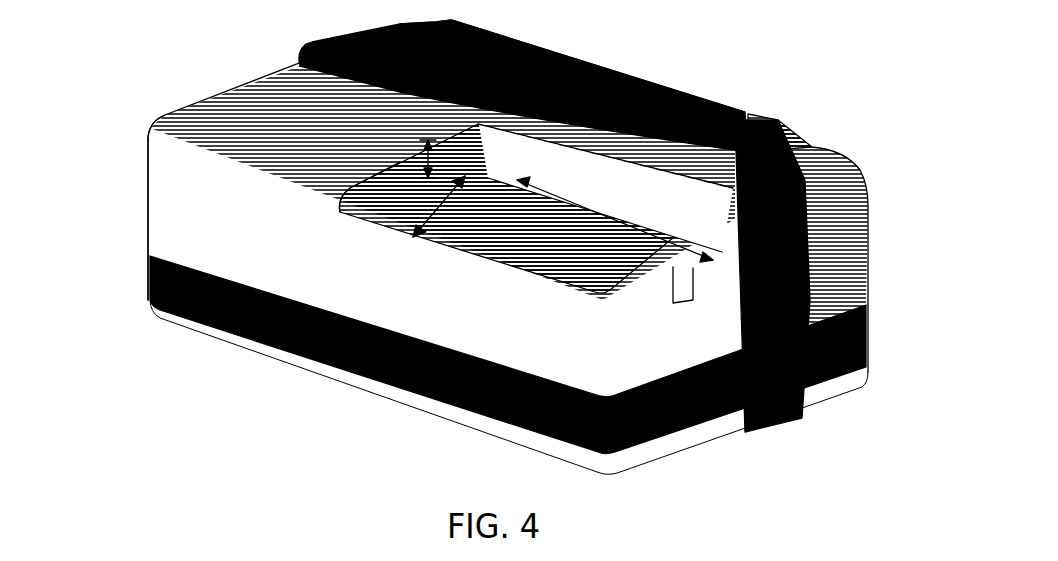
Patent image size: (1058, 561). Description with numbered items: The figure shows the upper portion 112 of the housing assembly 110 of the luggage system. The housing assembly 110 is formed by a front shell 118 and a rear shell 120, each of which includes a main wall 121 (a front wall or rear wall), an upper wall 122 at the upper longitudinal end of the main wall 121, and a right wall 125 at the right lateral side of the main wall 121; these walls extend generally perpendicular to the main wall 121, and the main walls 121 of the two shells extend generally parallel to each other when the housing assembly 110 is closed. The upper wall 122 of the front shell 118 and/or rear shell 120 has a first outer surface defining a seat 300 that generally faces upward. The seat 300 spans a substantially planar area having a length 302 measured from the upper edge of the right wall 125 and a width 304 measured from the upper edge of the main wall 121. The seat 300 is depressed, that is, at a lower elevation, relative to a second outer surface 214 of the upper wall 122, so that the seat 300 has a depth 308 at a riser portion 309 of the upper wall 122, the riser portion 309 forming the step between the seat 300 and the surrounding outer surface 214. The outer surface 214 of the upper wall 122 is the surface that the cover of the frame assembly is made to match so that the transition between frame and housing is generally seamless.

The housing assembly 110 is at (117, 113).
The upper portion 112 is at (918, 240).
The front shell 118 is at (150, 205).
The rear shell 120 is at (784, 124).
The main wall 121 is at (331, 385).
The upper wall 122 is at (272, 98).
The right wall 125 is at (680, 462).
The outer surface 214 is at (235, 108).
The seat 300 is at (565, 247).
The length 302 is at (585, 222).
The width 304 is at (456, 212).
The depth 308 is at (433, 160).
The riser portion 309 is at (380, 185).